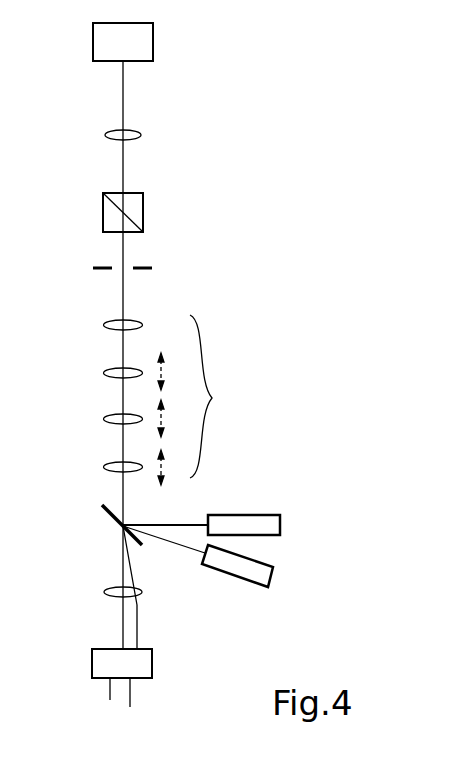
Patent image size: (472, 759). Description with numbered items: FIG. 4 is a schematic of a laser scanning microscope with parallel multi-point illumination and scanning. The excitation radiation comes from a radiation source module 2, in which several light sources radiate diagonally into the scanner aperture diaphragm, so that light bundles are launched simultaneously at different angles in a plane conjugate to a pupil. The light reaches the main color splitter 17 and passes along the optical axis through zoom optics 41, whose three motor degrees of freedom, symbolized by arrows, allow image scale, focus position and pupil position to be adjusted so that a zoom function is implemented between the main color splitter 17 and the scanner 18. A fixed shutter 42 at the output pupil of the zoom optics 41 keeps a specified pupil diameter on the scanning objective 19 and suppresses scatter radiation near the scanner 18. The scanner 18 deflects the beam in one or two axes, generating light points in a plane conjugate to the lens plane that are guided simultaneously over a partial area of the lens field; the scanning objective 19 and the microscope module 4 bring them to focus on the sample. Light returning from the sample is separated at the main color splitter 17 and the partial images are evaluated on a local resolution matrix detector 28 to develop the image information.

The microscope module 4 is at (103, 50).
The scanning objective 19 is at (105, 135).
The scanner 18 is at (101, 202).
The shutter 42 is at (93, 268).
The zoom optics 41 is at (185, 400).
The main color splitter 17 is at (102, 508).
The radiation source module 2 is at (288, 548).
The local resolution matrix detector 28 is at (92, 665).